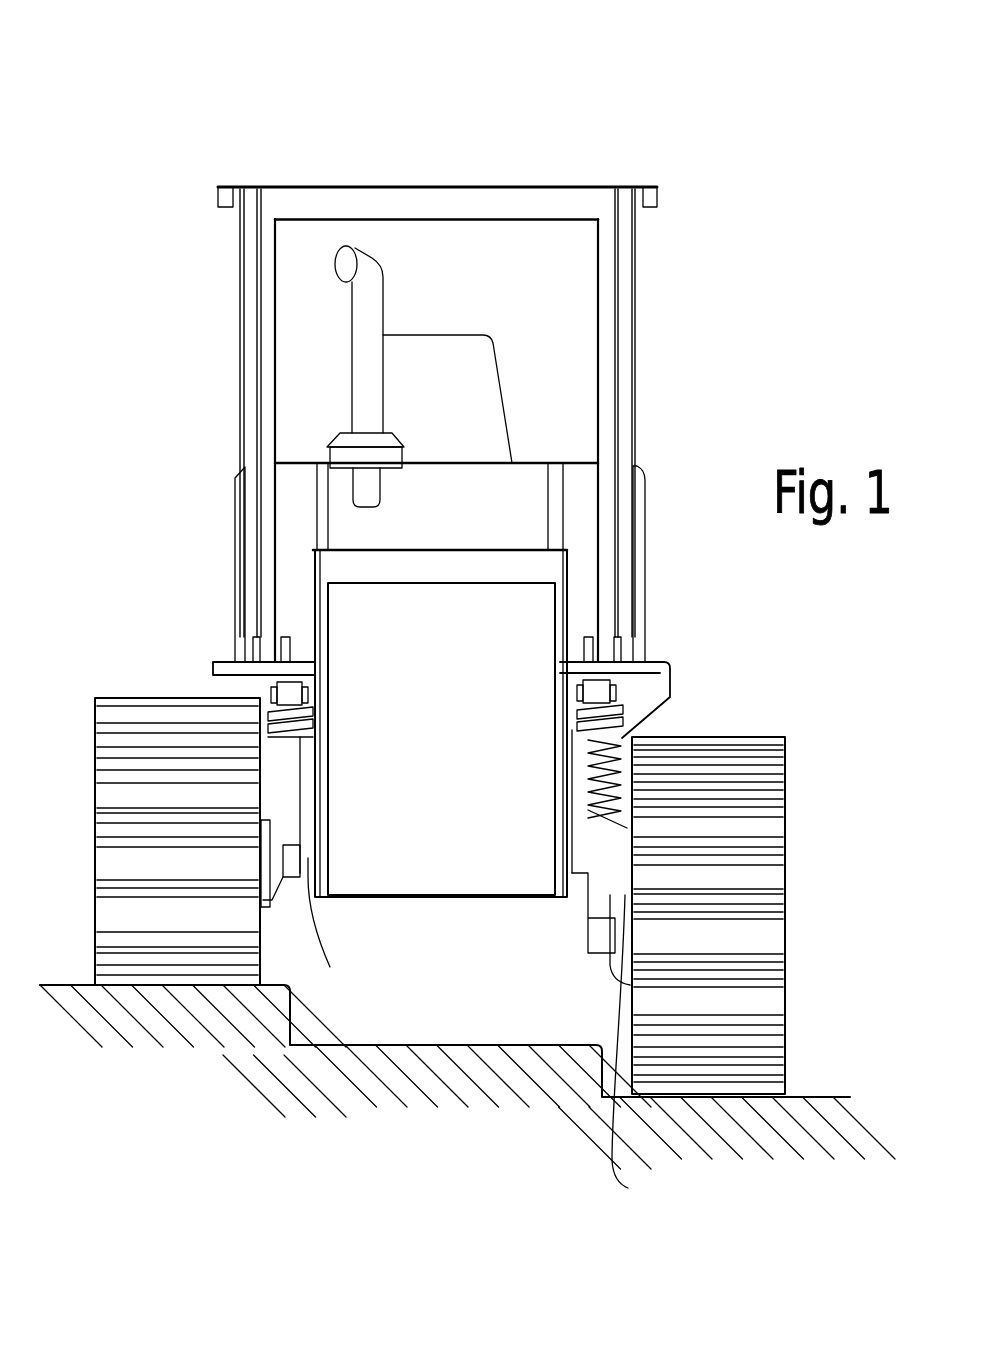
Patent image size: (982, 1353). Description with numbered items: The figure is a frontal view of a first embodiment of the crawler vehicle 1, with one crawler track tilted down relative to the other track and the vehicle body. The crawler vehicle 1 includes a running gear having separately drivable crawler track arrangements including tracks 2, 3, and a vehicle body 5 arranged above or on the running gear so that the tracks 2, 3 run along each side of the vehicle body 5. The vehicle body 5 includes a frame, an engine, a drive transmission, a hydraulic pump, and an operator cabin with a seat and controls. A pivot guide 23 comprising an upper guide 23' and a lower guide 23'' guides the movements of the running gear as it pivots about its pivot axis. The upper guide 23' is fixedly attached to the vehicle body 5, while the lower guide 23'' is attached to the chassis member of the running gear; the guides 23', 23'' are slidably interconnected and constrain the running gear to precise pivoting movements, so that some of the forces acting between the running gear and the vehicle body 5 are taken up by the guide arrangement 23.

The crawler vehicle 1 is at (178, 220).
The vehicle body 5 is at (635, 367).
The track 2 is at (117, 806).
The track 3 is at (768, 937).
The upper guide 23' is at (415, 707).
The pivot guide 23 is at (392, 939).
The lower guide 23'' is at (503, 1041).